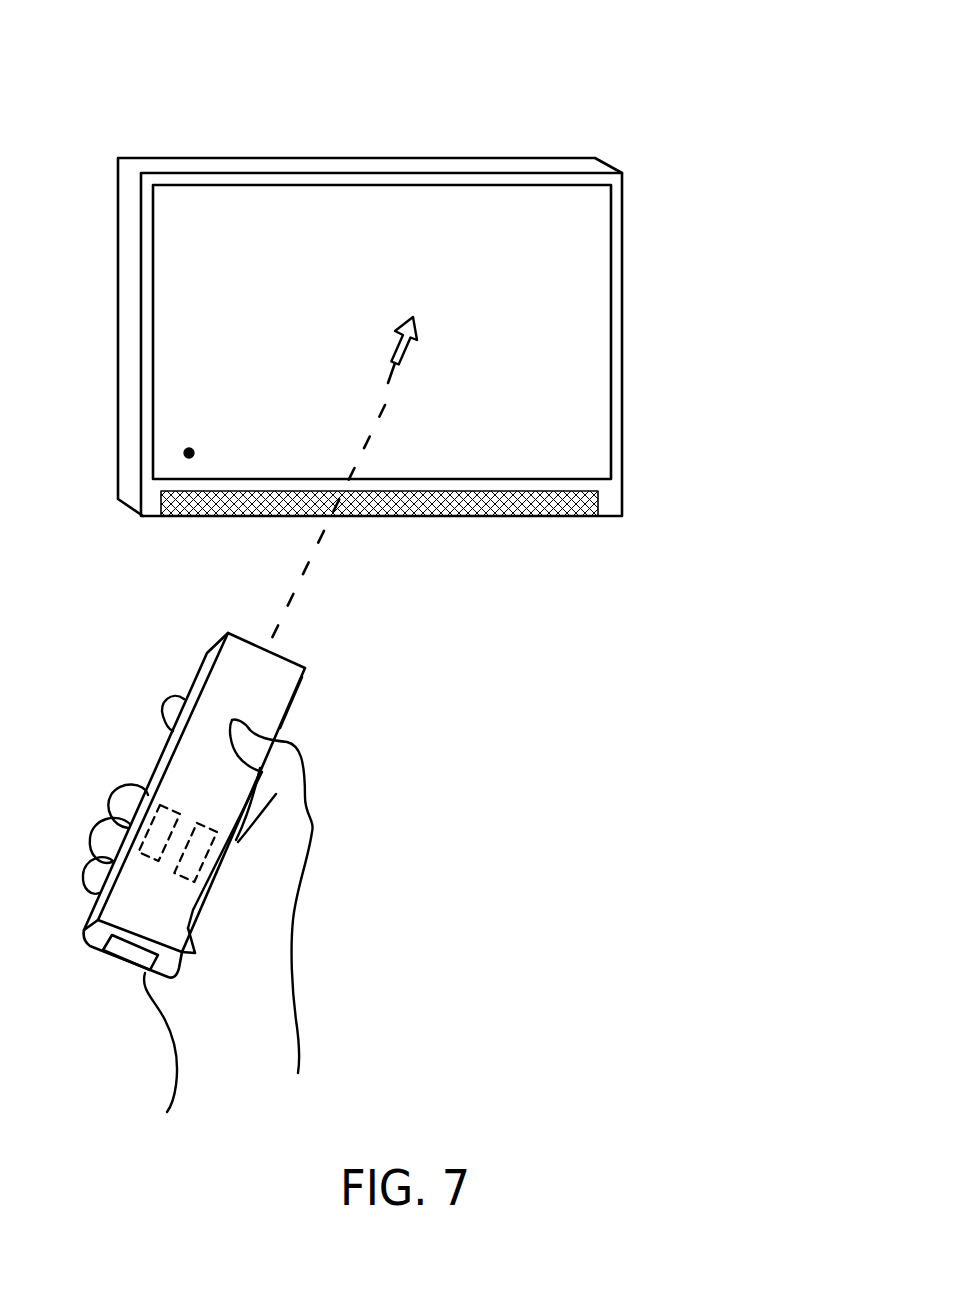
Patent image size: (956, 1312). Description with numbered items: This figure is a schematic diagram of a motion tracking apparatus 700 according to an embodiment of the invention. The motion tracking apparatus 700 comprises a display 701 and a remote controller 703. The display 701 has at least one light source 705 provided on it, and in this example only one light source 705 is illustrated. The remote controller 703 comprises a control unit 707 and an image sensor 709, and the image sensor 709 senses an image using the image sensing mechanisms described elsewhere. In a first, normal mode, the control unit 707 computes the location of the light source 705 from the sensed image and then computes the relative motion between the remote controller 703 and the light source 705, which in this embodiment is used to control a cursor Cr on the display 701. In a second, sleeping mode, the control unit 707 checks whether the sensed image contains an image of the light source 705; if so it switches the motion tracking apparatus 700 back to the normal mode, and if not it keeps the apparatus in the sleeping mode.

The motion tracking apparatus 700 is at (668, 86).
The display 701 is at (530, 174).
The remote controller 703 is at (302, 664).
The light source 705 is at (185, 452).
The control unit 707 is at (160, 833).
The image sensor 709 is at (203, 844).
The cursor Cr is at (406, 328).